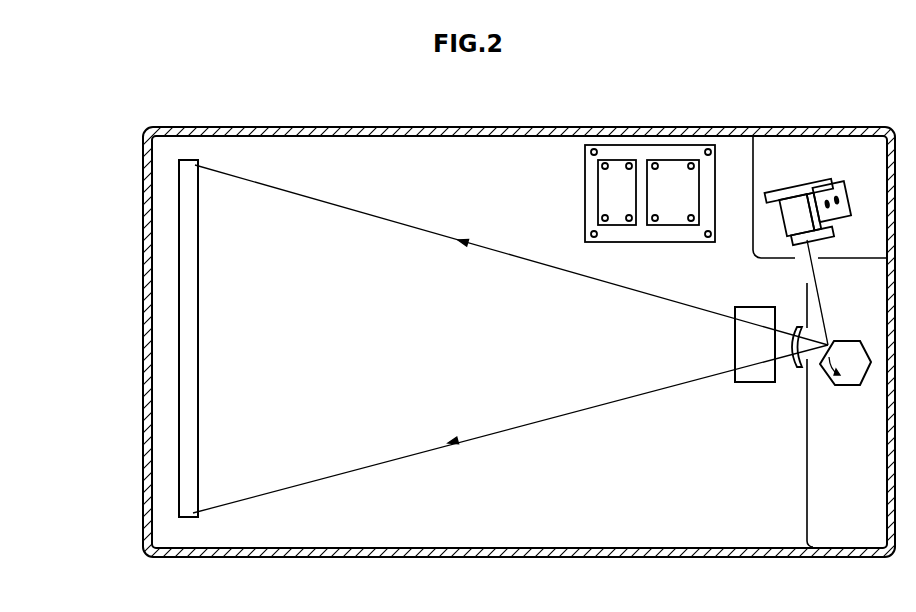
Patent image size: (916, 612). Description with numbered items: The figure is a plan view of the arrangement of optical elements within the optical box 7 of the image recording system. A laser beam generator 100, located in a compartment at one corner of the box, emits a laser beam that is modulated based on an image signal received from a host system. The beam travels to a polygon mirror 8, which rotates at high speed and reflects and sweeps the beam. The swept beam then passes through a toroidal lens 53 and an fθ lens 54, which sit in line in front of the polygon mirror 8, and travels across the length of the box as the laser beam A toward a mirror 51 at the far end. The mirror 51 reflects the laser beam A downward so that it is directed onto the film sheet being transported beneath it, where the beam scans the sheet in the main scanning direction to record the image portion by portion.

The optical box 7 is at (232, 126).
The mirror 51 is at (188, 240).
The laser beam generator 100 is at (814, 172).
The fθ lens 54 is at (742, 377).
The toroidal lens 53 is at (790, 369).
The polygon mirror 8 is at (846, 386).
The laser beam A is at (486, 437).